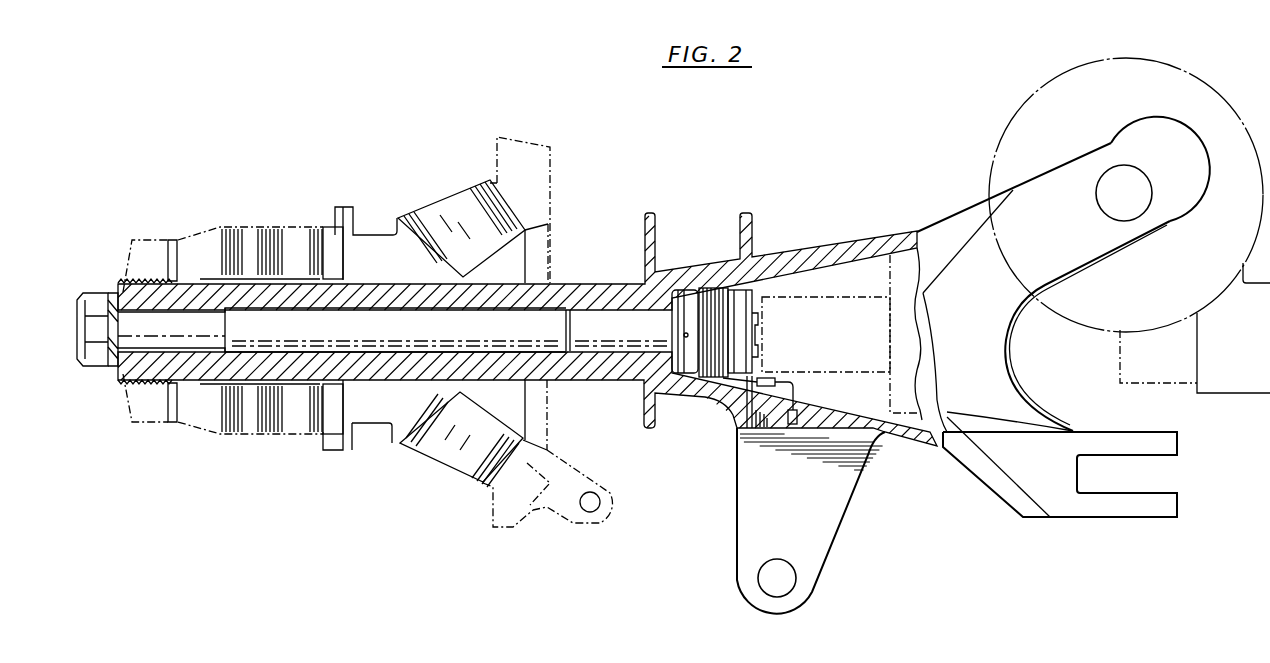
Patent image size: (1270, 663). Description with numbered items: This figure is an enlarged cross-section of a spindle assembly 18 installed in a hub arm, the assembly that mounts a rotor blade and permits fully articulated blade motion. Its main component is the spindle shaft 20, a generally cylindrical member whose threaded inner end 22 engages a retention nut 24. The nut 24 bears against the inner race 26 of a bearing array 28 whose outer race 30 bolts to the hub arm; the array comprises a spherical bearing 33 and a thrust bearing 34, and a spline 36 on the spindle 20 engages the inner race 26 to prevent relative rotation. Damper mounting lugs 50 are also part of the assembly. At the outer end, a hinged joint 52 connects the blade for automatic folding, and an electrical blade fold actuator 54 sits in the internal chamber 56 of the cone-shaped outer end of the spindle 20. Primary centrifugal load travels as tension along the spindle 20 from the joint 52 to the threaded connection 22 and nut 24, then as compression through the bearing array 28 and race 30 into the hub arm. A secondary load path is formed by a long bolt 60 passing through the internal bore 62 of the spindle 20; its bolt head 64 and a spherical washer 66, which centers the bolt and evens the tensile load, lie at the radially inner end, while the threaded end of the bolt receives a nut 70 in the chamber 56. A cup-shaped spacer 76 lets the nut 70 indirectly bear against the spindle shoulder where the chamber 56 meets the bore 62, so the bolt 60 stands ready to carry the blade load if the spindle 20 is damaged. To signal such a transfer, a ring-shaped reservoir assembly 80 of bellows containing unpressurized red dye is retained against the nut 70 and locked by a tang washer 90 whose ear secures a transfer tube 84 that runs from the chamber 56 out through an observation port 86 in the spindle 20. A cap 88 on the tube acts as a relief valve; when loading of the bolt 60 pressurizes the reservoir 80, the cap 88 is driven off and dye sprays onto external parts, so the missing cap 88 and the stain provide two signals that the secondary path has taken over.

The spindle assembly 18 is at (919, 525).
The spindle shaft 20 is at (483, 283).
The inner end 22 is at (130, 381).
The retention nut 24 is at (160, 237).
The inner race 26 is at (218, 227).
The bearing array 28 is at (356, 176).
The outer race 30 is at (535, 143).
The spherical bearing 33 is at (461, 198).
The thrust bearing 34 is at (281, 227).
The spline 36 is at (187, 280).
The damper mounting lugs 50 is at (816, 570).
The hinged joint 52 is at (1142, 172).
The electrical blade fold actuator 54 is at (832, 292).
The internal chamber 56 is at (851, 258).
The long bolt 60 is at (442, 335).
The internal bore 62 is at (548, 313).
The bolt head 64 is at (96, 293).
The spherical washer 66 is at (114, 290).
The nut 70 is at (742, 292).
The spacer 76 is at (683, 318).
The reservoir assembly 80 is at (712, 288).
The transfer tube 84 is at (795, 395).
The observation port 86 is at (765, 430).
The cap 88 is at (791, 428).
The tang washer 90 is at (748, 332).